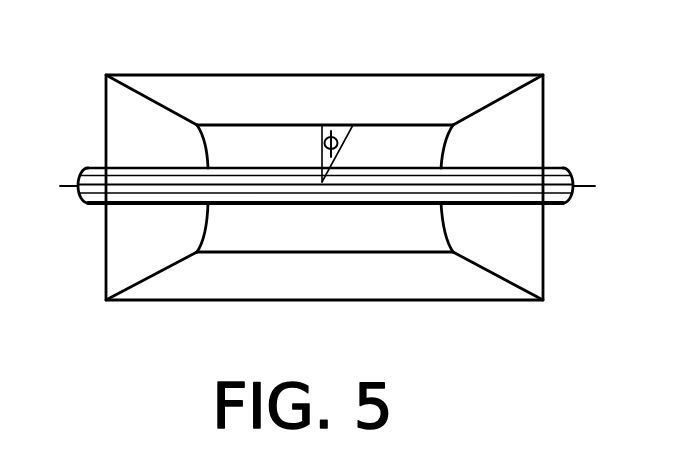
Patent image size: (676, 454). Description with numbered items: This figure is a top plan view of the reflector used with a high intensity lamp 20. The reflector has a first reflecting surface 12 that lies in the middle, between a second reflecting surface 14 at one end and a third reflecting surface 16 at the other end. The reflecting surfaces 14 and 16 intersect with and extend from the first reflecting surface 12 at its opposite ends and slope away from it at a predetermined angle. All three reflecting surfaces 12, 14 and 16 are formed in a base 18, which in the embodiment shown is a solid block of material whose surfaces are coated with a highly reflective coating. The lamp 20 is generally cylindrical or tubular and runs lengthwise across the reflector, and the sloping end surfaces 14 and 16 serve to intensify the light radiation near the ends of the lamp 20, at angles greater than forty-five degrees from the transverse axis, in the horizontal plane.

The first reflecting surface 12 is at (388, 140).
The second reflecting surface 14 is at (119, 136).
The third reflecting surface 16 is at (522, 129).
The base 18 is at (383, 302).
The high intensity lamp 20 is at (547, 208).